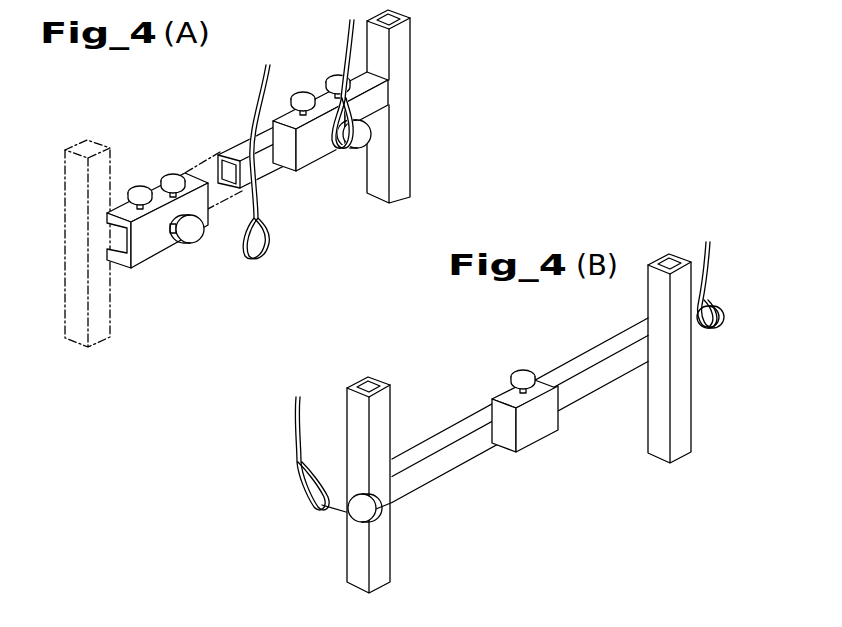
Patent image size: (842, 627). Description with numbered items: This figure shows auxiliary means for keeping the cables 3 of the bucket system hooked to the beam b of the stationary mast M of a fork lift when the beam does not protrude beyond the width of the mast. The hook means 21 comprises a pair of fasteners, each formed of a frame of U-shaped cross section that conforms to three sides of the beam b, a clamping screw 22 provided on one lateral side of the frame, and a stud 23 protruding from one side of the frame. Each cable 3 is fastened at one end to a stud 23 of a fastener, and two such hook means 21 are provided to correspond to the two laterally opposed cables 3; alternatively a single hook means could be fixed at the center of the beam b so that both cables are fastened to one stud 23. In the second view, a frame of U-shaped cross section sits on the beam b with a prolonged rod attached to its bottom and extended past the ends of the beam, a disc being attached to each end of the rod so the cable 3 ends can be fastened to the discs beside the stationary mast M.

In FIG. 4A, the cable 3 is at (252, 94).
In FIG. 4B, the cable 3 is at (292, 430).
In FIG. 4A, the beam b is at (230, 150).
In FIG. 4B, the beam b is at (453, 433).
In FIG. 4A, the hook means 21 is at (139, 252).
In FIG. 4B, the hook means 21 is at (538, 436).
In FIG. 4A, the clamping screw 22 is at (172, 174).
In FIG. 4B, the clamping screw 22 is at (518, 372).
In FIG. 4A, the stud 23 is at (212, 240).
In FIG. 4A, the stationary mast M is at (402, 65).
In FIG. 4B, the stationary mast M is at (386, 560).